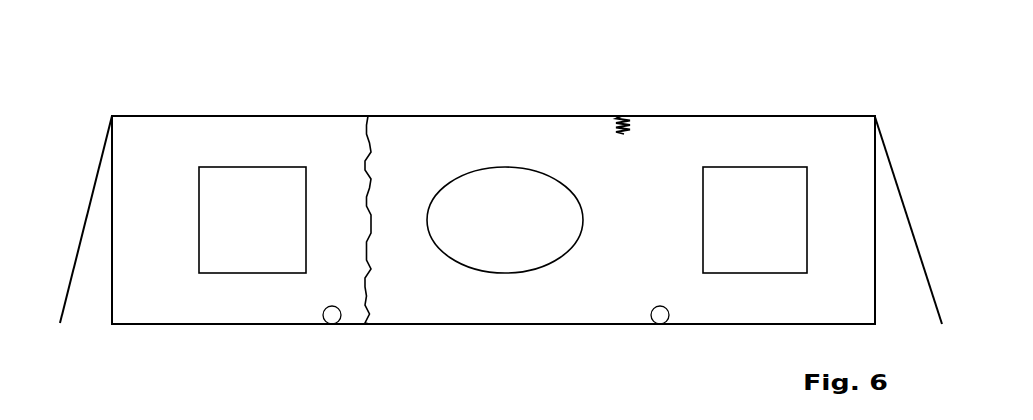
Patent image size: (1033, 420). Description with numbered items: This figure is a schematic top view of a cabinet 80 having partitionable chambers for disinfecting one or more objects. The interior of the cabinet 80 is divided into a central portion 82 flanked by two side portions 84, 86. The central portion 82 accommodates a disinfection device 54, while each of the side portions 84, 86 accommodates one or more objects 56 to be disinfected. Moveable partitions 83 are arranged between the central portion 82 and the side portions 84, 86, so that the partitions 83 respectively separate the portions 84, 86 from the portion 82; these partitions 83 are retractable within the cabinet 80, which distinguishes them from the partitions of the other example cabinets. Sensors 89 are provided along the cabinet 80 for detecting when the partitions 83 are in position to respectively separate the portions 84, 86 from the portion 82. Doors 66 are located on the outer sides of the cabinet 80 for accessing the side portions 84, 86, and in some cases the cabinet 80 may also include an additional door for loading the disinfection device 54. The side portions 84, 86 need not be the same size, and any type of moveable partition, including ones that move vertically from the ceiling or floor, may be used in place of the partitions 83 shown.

The cabinet 80 is at (822, 73).
The portion 82 is at (478, 133).
The moveable partitions 83 is at (369, 185).
The doors 66 is at (88, 213).
The objects 56 is at (267, 230).
The disinfection device 54 is at (518, 230).
The portion 84 is at (218, 298).
The portion 86 is at (774, 307).
The sensors 89 is at (336, 321).